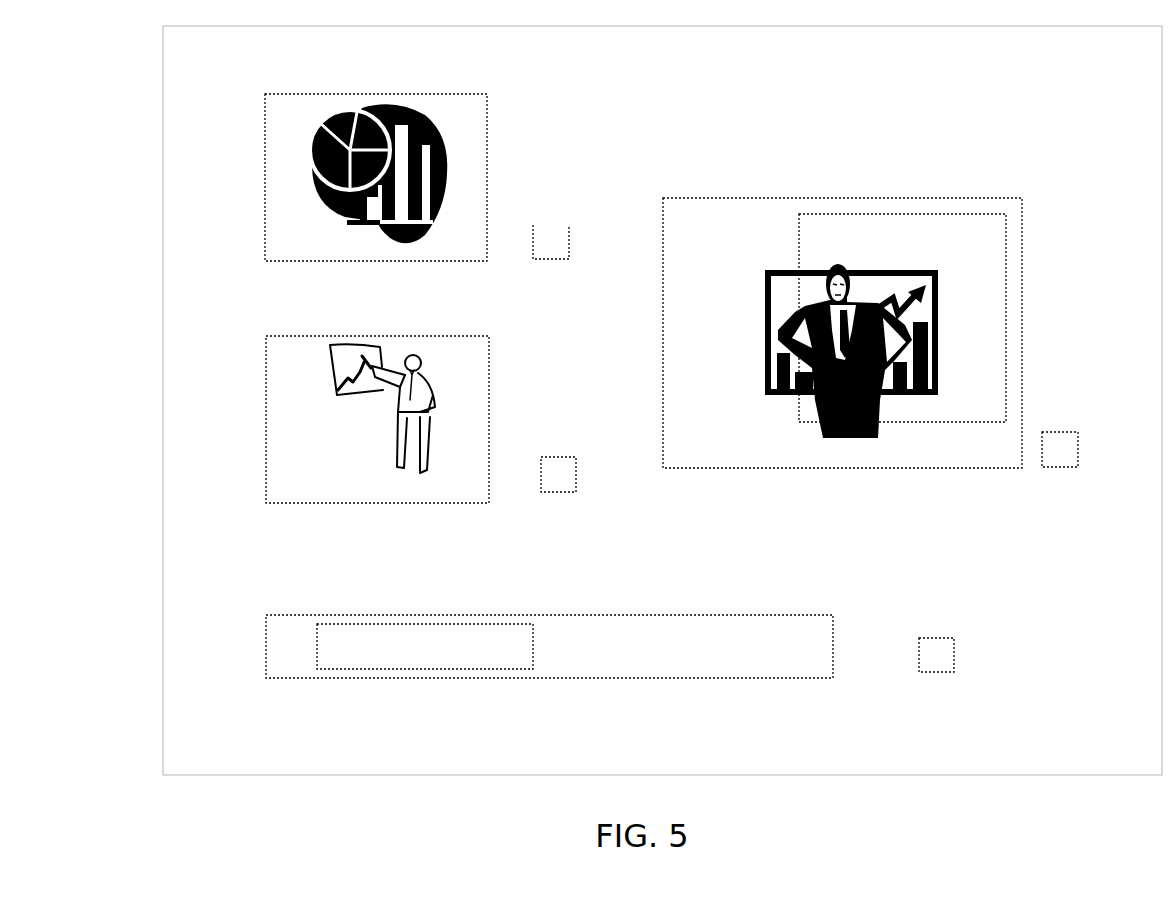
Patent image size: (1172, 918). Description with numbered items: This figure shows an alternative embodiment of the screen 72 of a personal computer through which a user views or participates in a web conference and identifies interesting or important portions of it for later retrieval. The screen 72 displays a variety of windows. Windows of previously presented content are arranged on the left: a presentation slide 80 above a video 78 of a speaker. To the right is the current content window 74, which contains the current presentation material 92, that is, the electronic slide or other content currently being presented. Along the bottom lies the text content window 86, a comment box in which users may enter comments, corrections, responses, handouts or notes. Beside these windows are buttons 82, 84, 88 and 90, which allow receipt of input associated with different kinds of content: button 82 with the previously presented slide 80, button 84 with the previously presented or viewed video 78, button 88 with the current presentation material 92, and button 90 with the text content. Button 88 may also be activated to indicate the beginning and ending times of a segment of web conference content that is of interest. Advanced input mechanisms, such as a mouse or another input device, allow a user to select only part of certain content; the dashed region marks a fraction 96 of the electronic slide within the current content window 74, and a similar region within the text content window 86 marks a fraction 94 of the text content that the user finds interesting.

The screen 72 is at (142, 63).
The current content window 74 is at (1042, 267).
The video 78 is at (242, 418).
The presentation slide 80 is at (245, 212).
The button 82 is at (588, 242).
The button 84 is at (593, 475).
The text content window 86 is at (855, 630).
The button 88 is at (1097, 448).
The button 90 is at (973, 655).
The current presentation material 92 is at (743, 315).
The fraction of text content 94 is at (390, 622).
The fraction of an electronic slide 96 is at (910, 215).